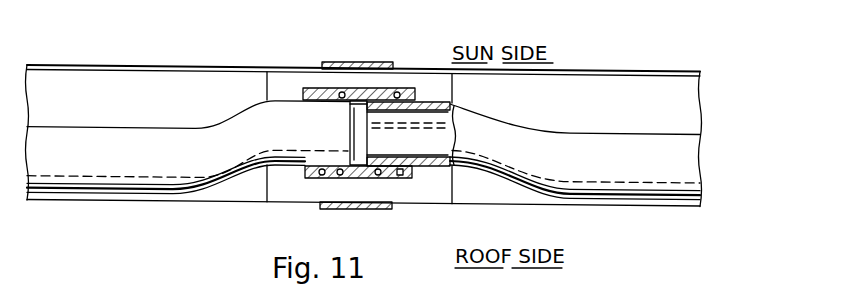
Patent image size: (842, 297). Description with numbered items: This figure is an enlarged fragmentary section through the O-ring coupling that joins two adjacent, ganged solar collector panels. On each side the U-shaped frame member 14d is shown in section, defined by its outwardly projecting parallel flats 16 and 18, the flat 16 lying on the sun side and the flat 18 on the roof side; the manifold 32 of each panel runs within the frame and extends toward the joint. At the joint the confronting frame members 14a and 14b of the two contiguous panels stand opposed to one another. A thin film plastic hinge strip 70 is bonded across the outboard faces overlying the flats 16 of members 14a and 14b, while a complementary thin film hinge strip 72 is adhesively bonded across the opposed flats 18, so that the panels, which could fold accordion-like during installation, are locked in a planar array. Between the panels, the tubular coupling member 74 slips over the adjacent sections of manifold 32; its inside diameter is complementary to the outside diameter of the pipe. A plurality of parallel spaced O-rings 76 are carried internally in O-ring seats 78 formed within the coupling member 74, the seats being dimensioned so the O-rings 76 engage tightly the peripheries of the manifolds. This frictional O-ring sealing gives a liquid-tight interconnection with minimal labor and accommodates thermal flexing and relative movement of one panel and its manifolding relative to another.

The flat 16 is at (85, 65).
The flat 18 is at (92, 201).
The frame member 14d is at (172, 95).
The frame member 14a is at (268, 88).
The frame member 14b is at (452, 85).
The manifold 32 is at (103, 147).
The hinge strip 70 is at (360, 62).
The hinge strip 72 is at (383, 212).
The coupling member 74 is at (272, 185).
The O-ring 76 is at (318, 88).
The O-ring seat 78 is at (315, 180).